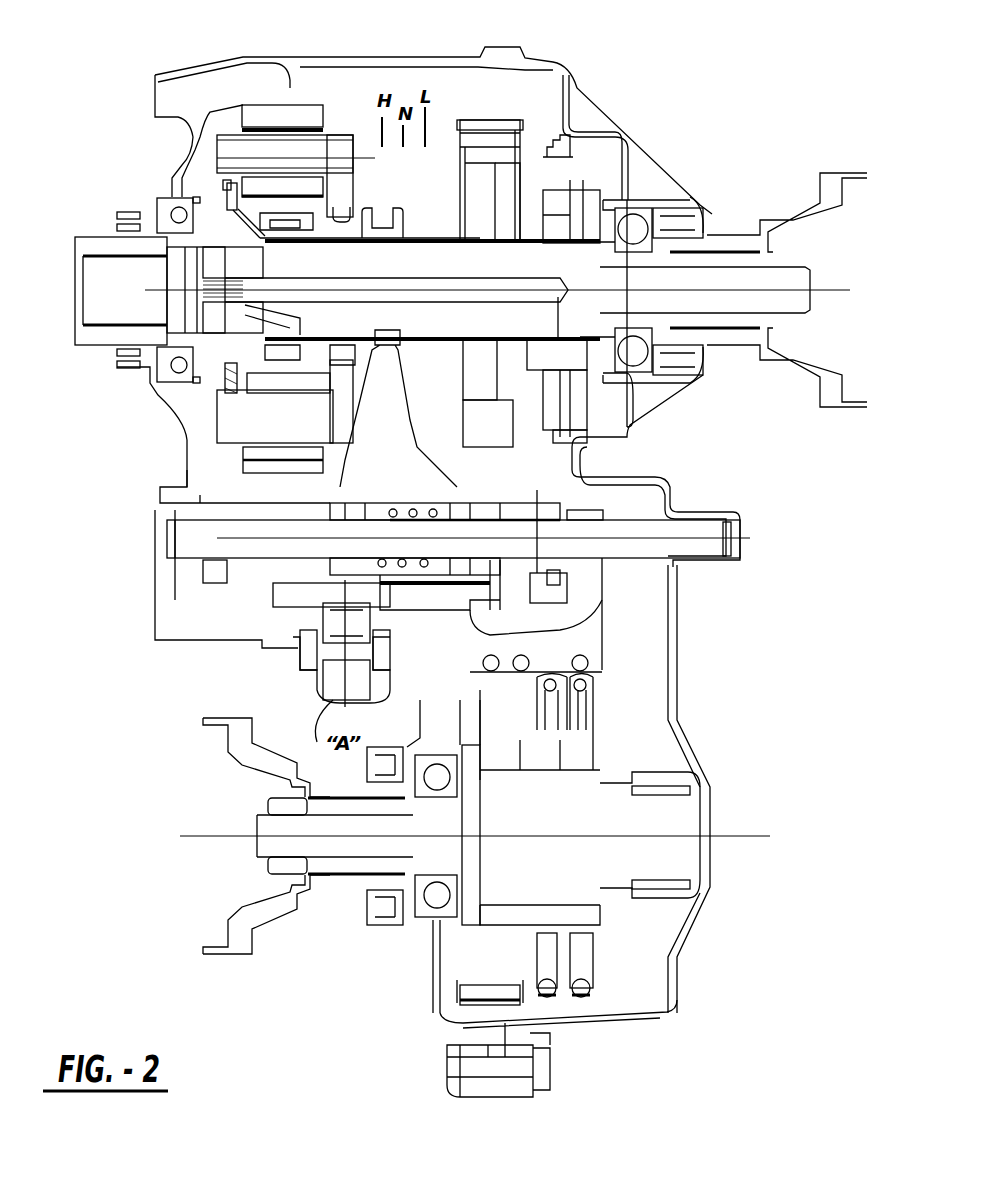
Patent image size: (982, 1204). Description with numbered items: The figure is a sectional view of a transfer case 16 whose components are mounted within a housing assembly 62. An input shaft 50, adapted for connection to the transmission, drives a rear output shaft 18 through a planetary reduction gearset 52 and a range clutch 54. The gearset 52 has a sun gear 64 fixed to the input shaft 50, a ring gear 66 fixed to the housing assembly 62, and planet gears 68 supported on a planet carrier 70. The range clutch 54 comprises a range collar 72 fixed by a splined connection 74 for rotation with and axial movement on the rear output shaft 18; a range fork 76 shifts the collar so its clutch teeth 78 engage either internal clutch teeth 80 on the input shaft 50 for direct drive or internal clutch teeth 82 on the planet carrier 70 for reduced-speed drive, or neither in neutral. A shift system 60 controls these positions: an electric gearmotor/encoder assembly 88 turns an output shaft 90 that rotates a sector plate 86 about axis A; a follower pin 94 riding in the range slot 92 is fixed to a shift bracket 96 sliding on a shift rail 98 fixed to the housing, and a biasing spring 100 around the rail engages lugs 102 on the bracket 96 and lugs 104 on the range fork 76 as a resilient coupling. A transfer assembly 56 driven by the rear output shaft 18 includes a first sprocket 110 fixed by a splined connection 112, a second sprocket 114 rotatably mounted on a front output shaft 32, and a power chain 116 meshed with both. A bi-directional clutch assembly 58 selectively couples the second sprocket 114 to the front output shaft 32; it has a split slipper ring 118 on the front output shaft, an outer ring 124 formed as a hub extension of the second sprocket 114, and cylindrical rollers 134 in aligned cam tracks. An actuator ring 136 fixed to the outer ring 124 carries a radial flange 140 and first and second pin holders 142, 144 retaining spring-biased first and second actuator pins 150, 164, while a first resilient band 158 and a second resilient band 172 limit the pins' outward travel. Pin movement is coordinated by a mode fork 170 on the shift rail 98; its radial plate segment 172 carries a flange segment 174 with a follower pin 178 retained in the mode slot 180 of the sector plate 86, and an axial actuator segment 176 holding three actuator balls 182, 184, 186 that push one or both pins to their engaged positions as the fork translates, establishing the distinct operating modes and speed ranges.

The transfer case 16 is at (706, 102).
The rear output shaft 18 is at (730, 273).
The front output shaft 32 is at (662, 815).
The input shaft 50 is at (97, 247).
The planetary reduction gearset 52 is at (340, 118).
The range clutch 54 is at (383, 205).
The transfer assembly 56 is at (457, 982).
The bi-directional clutch assembly 58 is at (607, 752).
The shift system 60 is at (568, 500).
The housing assembly 62 is at (515, 60).
The sun gear 64 is at (253, 370).
The ring gear 66 is at (280, 112).
The planet gears 68 is at (263, 137).
The planet carrier 70 is at (233, 423).
The range collar 72 is at (327, 233).
The splined connection 74 is at (378, 243).
The range fork 76 is at (383, 433).
The clutch teeth 78 is at (280, 224).
The internal clutch teeth 80 is at (280, 357).
The internal clutch teeth 82 is at (340, 362).
The sector plate 86 is at (290, 592).
The electric gearmotor/encoder assembly 88 is at (292, 672).
The output shaft 90 is at (337, 622).
The range slot 92 is at (497, 603).
The follower pin 94 is at (508, 593).
The shift bracket 96 is at (423, 577).
The shift rail 98 is at (192, 537).
The biasing spring 100 is at (420, 510).
The lugs 102 is at (380, 562).
The lugs 104 is at (378, 500).
The first sprocket 110 is at (477, 180).
The splined connection 112 is at (478, 243).
The second sprocket 114 is at (493, 973).
The power chain 116 is at (490, 125).
The slipper ring 118 is at (508, 773).
The outer ring 124 is at (560, 762).
The rollers 134 is at (530, 910).
The actuator ring 136 is at (563, 762).
The radial flange 140 is at (565, 960).
The first pin holder 142 is at (587, 715).
The second pin holder 144 is at (543, 720).
The first actuator pin 150 is at (585, 687).
The first resilient band 158 is at (548, 995).
The second actuator pin 164 is at (543, 750).
The mode fork 170 is at (610, 605).
The radial plate segment 172 is at (595, 617).
The flange segment 174 is at (536, 570).
The axial actuator segment 176 is at (488, 657).
The follower pin 178 is at (556, 575).
The mode slot 180 is at (553, 600).
The first actuator ball 182 is at (583, 657).
The second actuator ball 184 is at (492, 680).
The third actuator ball 186 is at (518, 663).